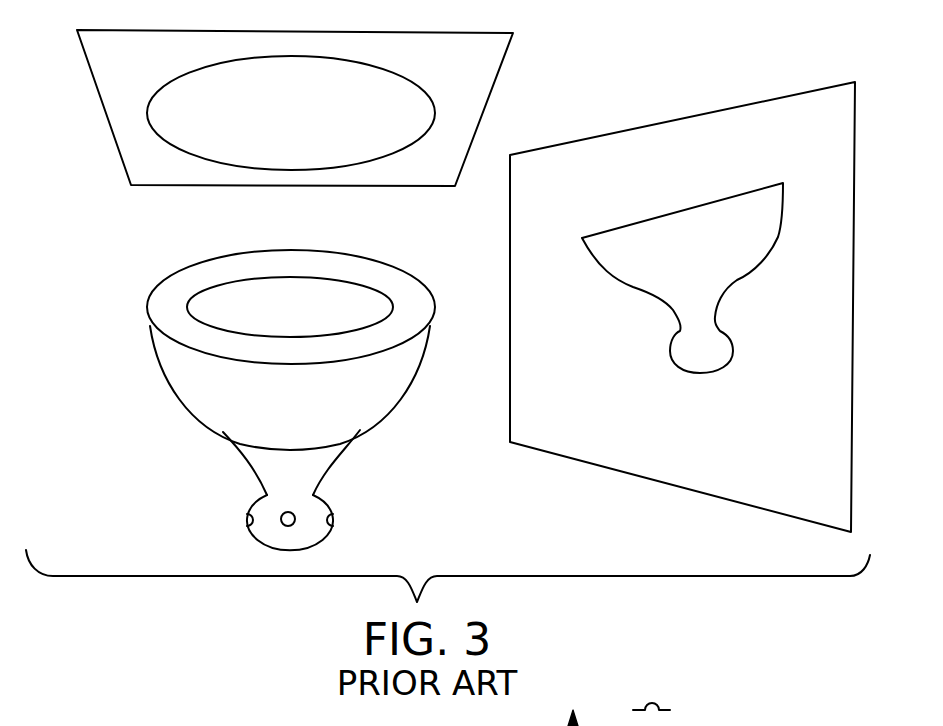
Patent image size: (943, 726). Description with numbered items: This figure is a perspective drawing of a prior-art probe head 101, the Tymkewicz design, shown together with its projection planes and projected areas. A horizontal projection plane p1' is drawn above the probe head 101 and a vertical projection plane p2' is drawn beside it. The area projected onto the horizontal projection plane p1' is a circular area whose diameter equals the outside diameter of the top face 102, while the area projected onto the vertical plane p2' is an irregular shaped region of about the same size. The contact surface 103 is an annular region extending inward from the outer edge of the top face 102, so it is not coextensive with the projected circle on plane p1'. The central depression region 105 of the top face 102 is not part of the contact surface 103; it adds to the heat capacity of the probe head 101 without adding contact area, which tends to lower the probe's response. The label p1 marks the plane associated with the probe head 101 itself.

The probe head 101 is at (254, 381).
The top face 102 is at (302, 279).
The contact surface 103 is at (405, 306).
The depression region 105 is at (233, 297).
The first projection plane p1 is at (137, 232).
The horizontal projection plane p1' is at (325, 102).
The vertical projection plane p2' is at (682, 288).